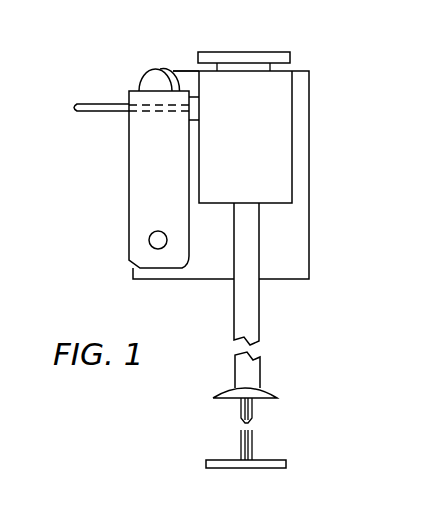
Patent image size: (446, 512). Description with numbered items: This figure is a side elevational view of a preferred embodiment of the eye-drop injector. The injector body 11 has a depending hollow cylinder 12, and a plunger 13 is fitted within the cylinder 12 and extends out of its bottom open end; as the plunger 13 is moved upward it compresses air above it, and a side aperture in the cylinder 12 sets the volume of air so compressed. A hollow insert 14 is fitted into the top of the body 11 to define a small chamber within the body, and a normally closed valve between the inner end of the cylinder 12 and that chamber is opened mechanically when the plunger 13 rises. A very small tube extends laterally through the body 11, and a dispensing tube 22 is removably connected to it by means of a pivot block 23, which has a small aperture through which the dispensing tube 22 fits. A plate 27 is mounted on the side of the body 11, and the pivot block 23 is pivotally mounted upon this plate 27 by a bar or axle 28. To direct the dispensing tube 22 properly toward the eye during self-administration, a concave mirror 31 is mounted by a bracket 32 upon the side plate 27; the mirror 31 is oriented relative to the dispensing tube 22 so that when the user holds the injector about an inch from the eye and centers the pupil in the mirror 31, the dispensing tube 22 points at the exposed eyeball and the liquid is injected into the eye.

The injector body 11 is at (292, 118).
The hollow cylinder 12 is at (259, 323).
The plunger 13 is at (252, 407).
The hollow insert 14 is at (291, 56).
The dispensing tube 22 is at (83, 103).
The pivot block 23 is at (129, 175).
The plate 27 is at (309, 222).
The bar or axle 28 is at (149, 243).
The concave mirror 31 is at (153, 70).
The bracket 32 is at (174, 71).